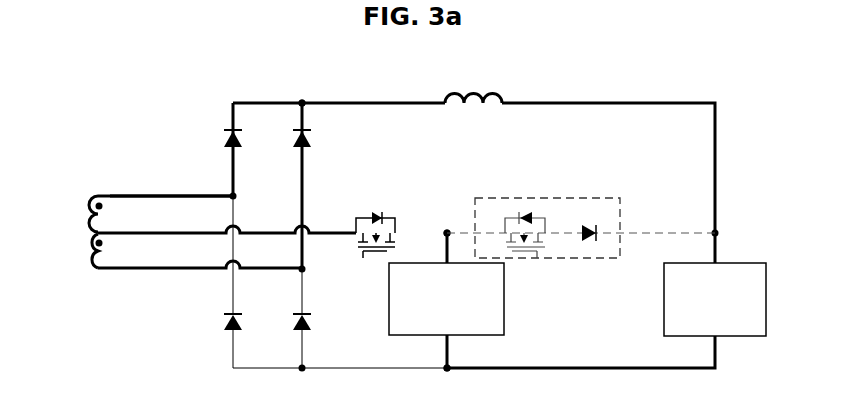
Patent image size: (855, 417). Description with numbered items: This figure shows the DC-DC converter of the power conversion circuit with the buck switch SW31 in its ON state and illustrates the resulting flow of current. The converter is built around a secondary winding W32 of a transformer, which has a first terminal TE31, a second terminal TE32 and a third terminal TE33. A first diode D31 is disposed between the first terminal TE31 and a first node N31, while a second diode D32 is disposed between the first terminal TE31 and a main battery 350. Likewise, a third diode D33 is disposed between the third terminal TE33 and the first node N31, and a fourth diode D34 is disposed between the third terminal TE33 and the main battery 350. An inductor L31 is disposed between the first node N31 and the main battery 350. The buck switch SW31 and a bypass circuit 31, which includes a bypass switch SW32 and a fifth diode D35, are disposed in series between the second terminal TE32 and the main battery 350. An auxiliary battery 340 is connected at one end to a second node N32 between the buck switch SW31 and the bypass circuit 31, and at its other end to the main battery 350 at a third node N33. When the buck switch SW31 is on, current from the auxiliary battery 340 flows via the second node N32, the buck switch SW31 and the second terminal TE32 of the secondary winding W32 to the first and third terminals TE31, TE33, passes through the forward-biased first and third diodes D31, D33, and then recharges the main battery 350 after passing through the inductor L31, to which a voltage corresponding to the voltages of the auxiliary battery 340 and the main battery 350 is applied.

The bypass circuit 31 is at (557, 198).
The auxiliary battery 340 is at (504, 319).
The main battery 350 is at (750, 263).
The inductor L31 is at (473, 83).
The first node N31 is at (304, 90).
The second node N32 is at (440, 221).
The third node N33 is at (437, 380).
The first diode D31 is at (207, 139).
The second diode D32 is at (207, 325).
The third diode D33 is at (330, 141).
The fourth diode D34 is at (328, 325).
The fifth diode D35 is at (601, 256).
The secondary winding W32 is at (132, 232).
The first terminal TE31 is at (171, 183).
The second terminal TE32 is at (227, 220).
The third terminal TE33 is at (200, 256).
The buck switch SW31 is at (377, 223).
The bypass switch SW32 is at (537, 249).